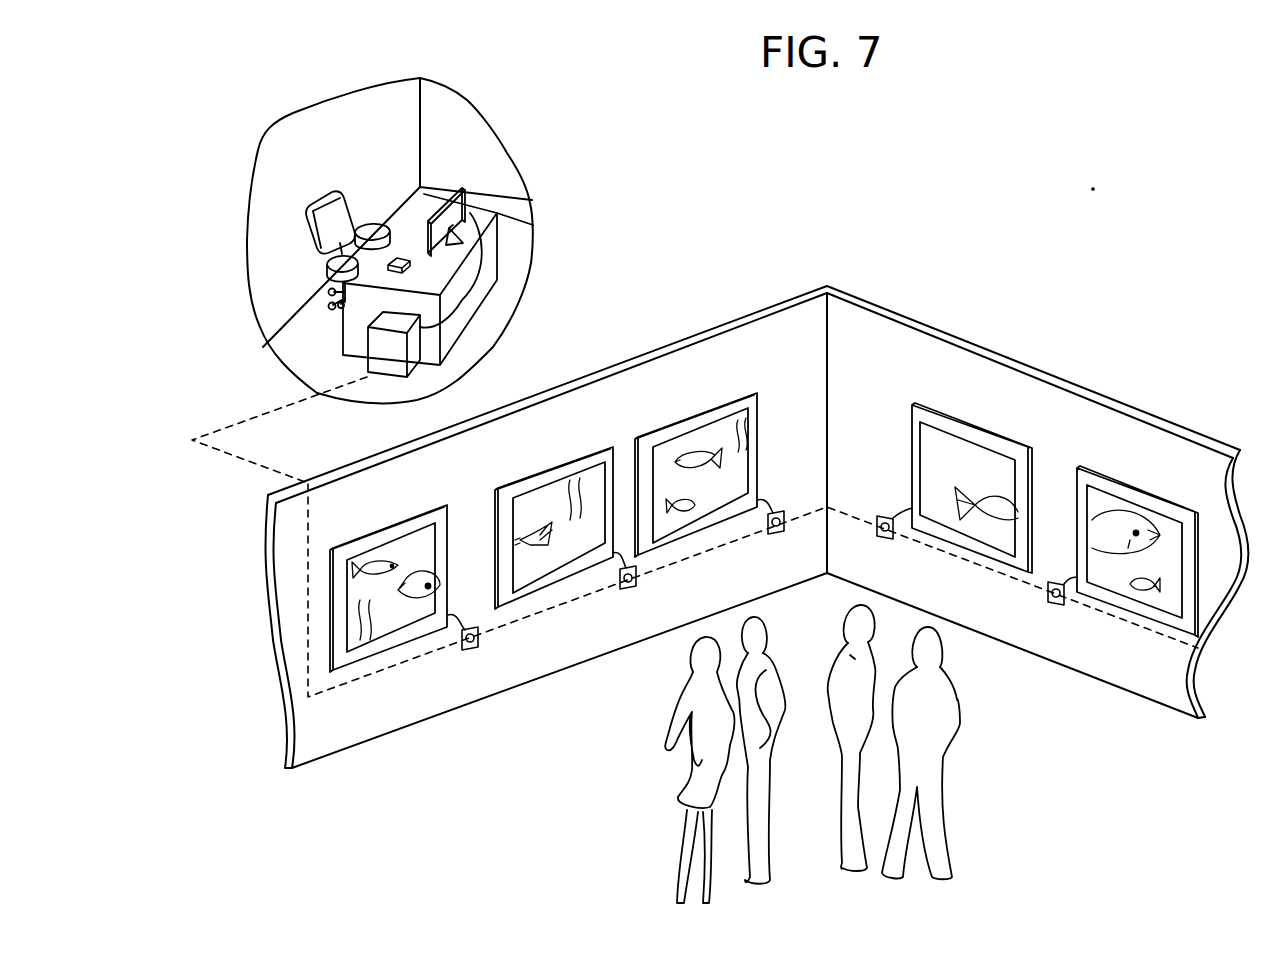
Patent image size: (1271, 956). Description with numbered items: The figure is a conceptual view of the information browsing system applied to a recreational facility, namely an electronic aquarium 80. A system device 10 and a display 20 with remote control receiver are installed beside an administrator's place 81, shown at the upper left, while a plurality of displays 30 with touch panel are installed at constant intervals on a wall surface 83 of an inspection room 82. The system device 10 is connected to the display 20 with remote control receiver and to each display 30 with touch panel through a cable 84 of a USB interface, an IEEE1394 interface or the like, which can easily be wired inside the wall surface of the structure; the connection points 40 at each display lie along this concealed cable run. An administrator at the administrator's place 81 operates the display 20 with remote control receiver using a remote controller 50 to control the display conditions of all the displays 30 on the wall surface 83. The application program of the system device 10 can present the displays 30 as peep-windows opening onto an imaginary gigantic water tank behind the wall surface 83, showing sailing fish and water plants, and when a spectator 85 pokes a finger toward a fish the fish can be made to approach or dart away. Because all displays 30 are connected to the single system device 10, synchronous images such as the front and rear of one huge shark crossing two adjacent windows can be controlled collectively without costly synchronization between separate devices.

The system device 10 is at (387, 365).
The display with remote control receiver 20 is at (458, 213).
The display with touch panel 30 is at (422, 533).
The network connection (cable terminals) 40 is at (227, 457).
The remote controller 50 is at (403, 257).
The electronic aquarium 80 is at (1138, 273).
The administrator's place 81 is at (458, 128).
The inspection room 82 is at (1052, 778).
The wall surface 83 is at (863, 315).
The cable 84 is at (403, 658).
The spectator 85 is at (697, 770).